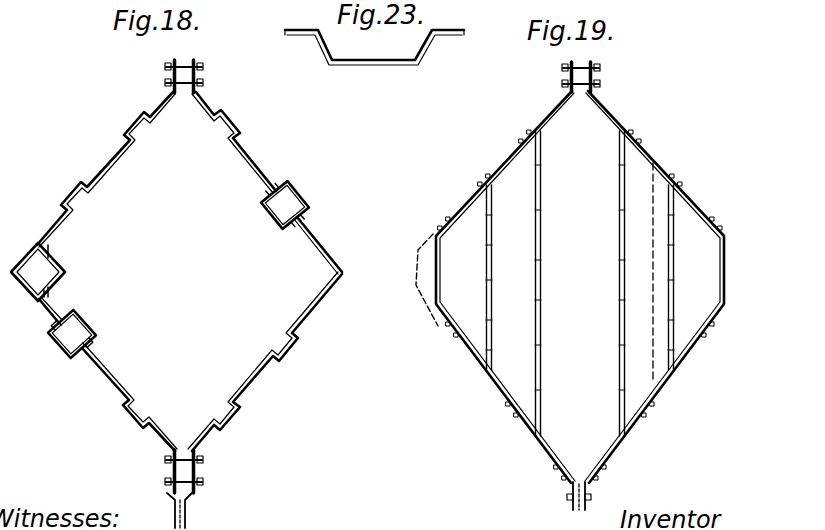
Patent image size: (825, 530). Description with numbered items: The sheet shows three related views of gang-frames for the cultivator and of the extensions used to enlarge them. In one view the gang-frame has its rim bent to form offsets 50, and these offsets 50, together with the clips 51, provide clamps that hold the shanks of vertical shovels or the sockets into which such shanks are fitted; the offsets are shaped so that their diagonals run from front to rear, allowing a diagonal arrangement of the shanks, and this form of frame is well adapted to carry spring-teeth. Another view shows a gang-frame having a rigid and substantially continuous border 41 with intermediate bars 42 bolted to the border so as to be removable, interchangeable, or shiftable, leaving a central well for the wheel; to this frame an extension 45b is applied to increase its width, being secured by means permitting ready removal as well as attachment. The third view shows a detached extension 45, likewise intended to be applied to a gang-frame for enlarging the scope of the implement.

In FIG. 18, the offsets 50 is at (130, 134).
In FIG. 18, the clips 51 is at (94, 322).
In FIG. 19, the border 41 is at (517, 412).
In FIG. 19, the intermediate bars 42 is at (529, 243).
In FIG. 19, the extension 45b is at (430, 240).
In FIG. 23, the extension 45 is at (382, 64).